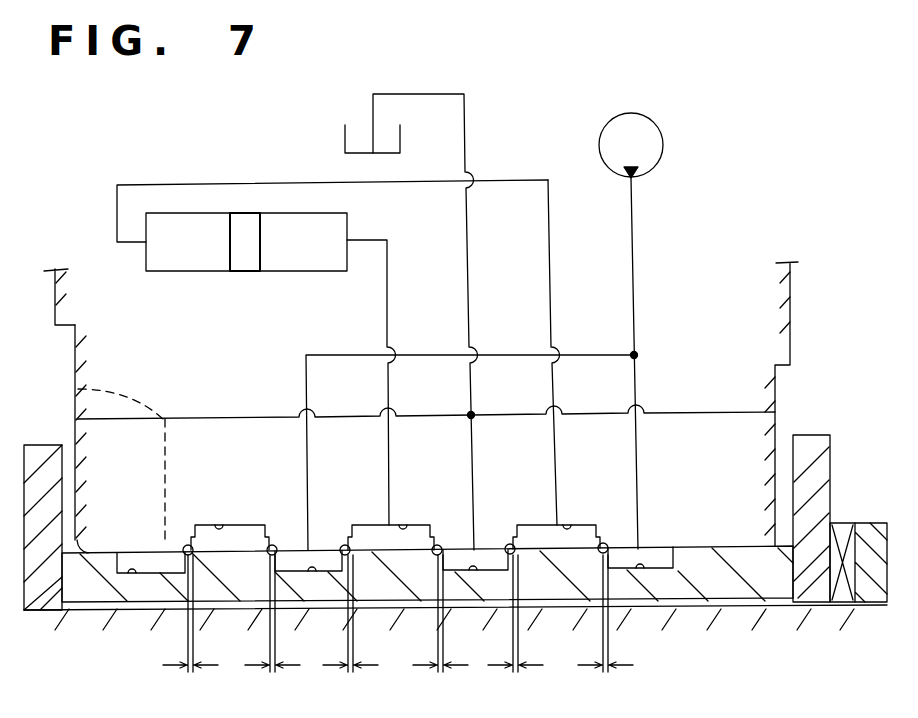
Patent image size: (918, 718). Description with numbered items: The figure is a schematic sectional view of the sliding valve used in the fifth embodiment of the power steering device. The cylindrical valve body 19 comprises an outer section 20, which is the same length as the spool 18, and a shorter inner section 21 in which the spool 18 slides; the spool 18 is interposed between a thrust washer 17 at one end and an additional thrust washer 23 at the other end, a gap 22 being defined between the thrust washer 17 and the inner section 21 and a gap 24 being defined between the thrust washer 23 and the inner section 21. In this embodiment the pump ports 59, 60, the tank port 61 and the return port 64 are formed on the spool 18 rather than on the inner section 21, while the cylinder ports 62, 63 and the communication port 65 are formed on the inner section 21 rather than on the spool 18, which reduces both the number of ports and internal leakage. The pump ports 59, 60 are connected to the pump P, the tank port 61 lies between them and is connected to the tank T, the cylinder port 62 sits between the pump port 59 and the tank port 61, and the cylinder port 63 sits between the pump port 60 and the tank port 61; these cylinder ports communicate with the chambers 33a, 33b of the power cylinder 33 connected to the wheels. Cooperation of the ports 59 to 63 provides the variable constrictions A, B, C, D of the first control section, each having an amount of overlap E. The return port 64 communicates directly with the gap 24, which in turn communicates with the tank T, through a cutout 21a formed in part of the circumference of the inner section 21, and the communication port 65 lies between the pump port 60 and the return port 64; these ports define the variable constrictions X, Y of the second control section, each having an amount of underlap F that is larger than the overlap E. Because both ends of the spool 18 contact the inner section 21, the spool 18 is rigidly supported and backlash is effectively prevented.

The power cylinder 33 is at (246, 197).
The chamber of power cylinder 33a is at (170, 222).
The chamber of power cylinder 33b is at (298, 220).
The tank T is at (402, 140).
The pump P is at (663, 132).
The valve body 19 is at (51, 404).
The outer section 20 is at (56, 296).
The inner section 21 is at (65, 432).
The cutout 21a is at (165, 445).
The thrust washer 23 is at (33, 456).
The gap 24 is at (66, 456).
The gap 22 is at (783, 445).
The thrust washer 17 is at (820, 446).
The spool 18 is at (726, 590).
The communication port 65 is at (220, 521).
The cylinder port 63 is at (395, 521).
The cylinder port 62 is at (563, 521).
The return port 64 is at (133, 578).
The pump port 60 is at (312, 576).
The tank port 61 is at (473, 575).
The pump port 59 is at (641, 573).
The variable constriction X is at (270, 557).
The variable constriction Y is at (186, 557).
The variable constriction A is at (601, 555).
The variable constriction B is at (347, 557).
The variable constriction C is at (512, 556).
The variable constriction D is at (435, 557).
The amount of overlap E is at (478, 626).
The amount of underlap F is at (231, 626).